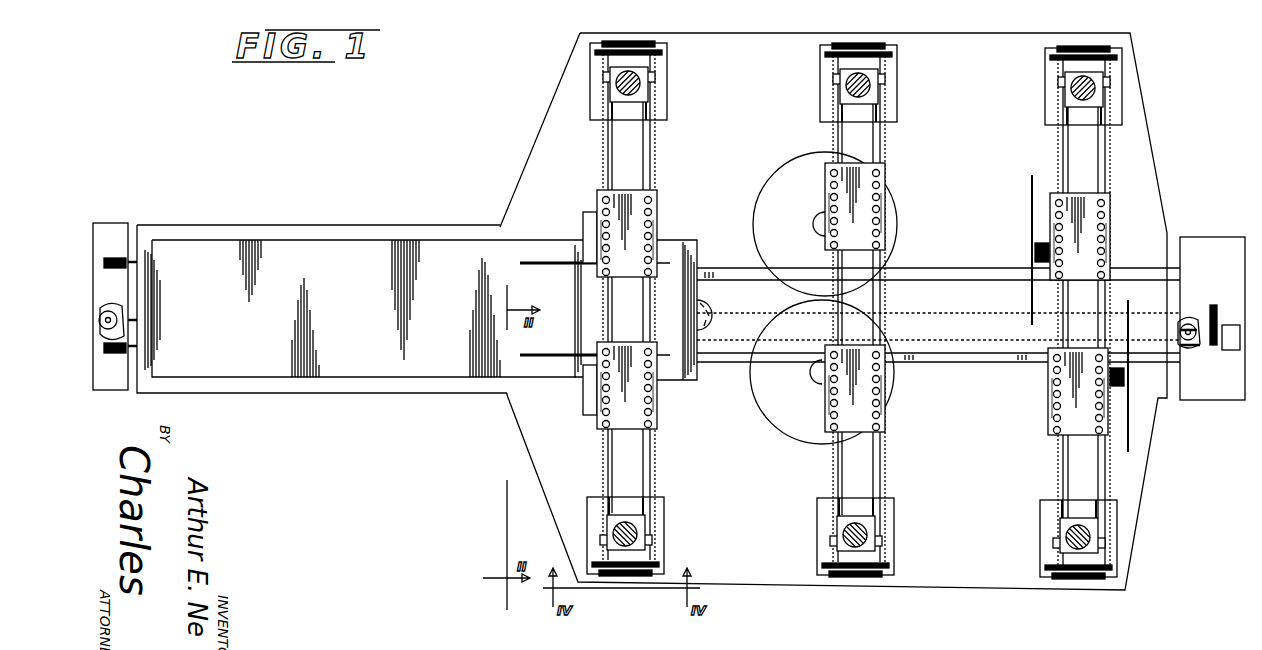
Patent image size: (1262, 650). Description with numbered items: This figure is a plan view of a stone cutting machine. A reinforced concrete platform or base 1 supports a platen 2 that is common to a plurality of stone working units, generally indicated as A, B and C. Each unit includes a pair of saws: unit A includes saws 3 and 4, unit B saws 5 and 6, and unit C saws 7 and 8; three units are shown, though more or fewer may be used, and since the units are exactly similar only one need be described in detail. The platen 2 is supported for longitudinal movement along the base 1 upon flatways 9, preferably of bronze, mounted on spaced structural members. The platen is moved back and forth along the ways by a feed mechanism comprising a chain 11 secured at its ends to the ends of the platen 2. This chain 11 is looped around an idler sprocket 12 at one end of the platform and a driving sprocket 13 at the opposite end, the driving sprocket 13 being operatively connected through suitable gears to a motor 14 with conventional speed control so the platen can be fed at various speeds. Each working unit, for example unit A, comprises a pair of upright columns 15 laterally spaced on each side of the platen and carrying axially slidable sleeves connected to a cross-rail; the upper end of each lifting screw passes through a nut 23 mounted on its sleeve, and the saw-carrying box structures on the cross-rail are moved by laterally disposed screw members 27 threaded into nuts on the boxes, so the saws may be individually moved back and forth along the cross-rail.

The reinforced concrete platform or base 1 is at (547, 145).
The platen 2 is at (259, 262).
The saw 3 is at (556, 263).
The saw 4 is at (560, 358).
The saw 5 is at (765, 193).
The saw 6 is at (777, 398).
The saw 7 is at (1032, 181).
The saw 8 is at (1128, 400).
The flatways 9 is at (937, 272).
The chain 11 is at (710, 317).
The idler sprocket 12 is at (112, 310).
The driving sprocket 13 is at (1190, 352).
The motor 14 is at (1236, 350).
The upright columns 15 is at (645, 84).
The nut 23 is at (635, 212).
The screw members 27 is at (603, 466).
The stone working unit A is at (634, 308).
The stone working unit B is at (838, 310).
The stone working unit C is at (1084, 312).